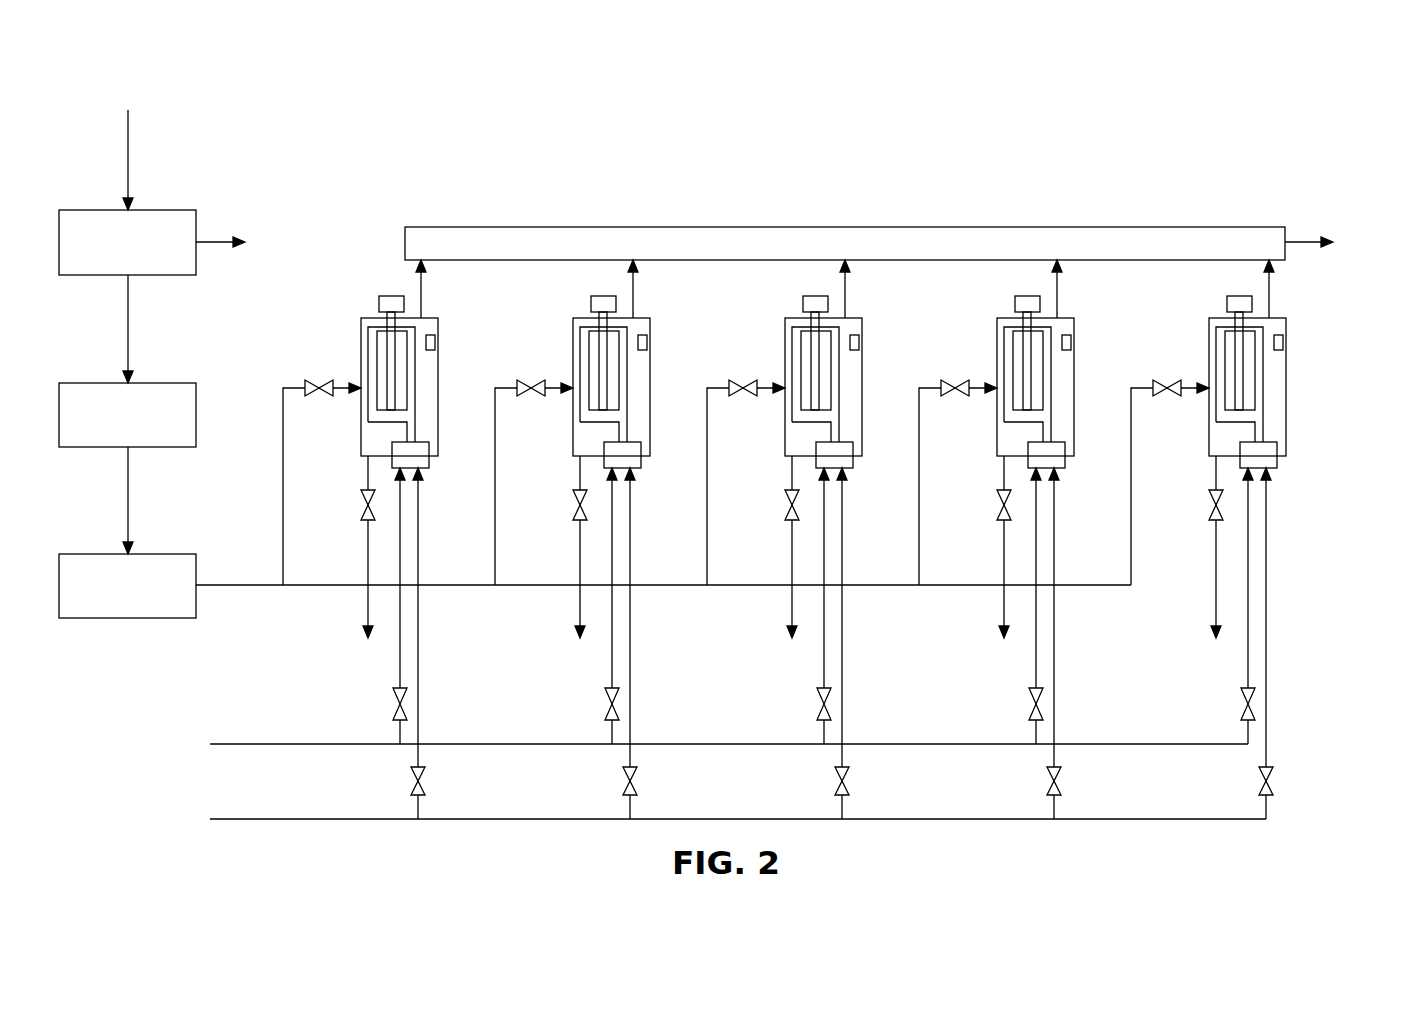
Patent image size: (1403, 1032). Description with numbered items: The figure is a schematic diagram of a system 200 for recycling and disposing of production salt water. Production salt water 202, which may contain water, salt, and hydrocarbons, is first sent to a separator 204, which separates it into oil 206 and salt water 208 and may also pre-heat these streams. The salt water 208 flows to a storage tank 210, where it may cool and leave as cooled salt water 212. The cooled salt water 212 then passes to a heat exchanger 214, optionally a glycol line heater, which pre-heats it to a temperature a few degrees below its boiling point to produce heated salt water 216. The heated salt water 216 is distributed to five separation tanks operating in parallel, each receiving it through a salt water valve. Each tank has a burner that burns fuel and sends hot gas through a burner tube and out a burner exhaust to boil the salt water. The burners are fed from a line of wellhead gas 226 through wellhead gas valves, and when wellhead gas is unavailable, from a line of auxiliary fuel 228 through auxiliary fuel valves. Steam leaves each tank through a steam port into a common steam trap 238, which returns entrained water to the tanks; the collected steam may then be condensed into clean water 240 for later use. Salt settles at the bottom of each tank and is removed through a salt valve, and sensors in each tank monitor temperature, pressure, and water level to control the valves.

The system 200 is at (943, 145).
The production salt water 202 is at (125, 138).
The separator 204 is at (83, 208).
The oil 206 is at (217, 242).
The salt water 208 is at (125, 313).
The storage tank 210 is at (85, 382).
The cooled salt water 212 is at (125, 487).
The heat exchanger 214 is at (85, 553).
The heated salt water 216 is at (246, 584).
The wellhead gas 226 is at (300, 745).
The auxiliary fuel 228 is at (287, 823).
The steam trap 238 is at (755, 226).
The clean water 240 is at (1300, 240).